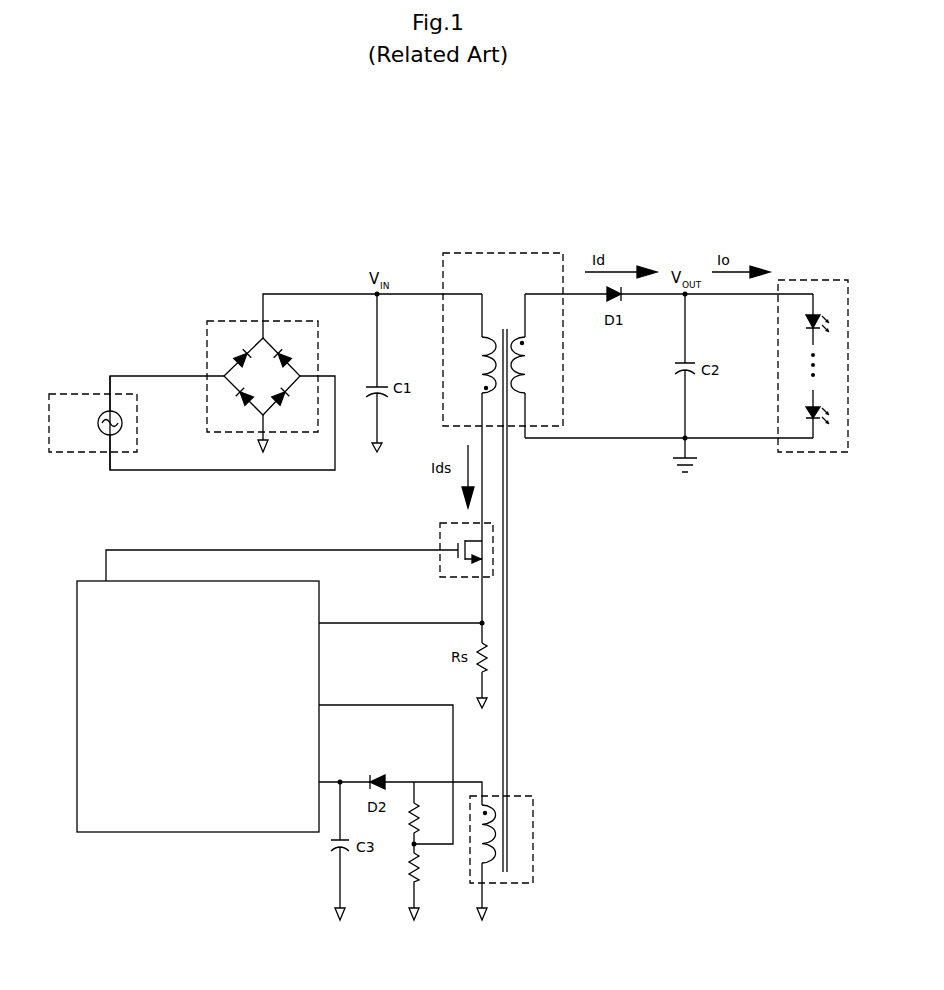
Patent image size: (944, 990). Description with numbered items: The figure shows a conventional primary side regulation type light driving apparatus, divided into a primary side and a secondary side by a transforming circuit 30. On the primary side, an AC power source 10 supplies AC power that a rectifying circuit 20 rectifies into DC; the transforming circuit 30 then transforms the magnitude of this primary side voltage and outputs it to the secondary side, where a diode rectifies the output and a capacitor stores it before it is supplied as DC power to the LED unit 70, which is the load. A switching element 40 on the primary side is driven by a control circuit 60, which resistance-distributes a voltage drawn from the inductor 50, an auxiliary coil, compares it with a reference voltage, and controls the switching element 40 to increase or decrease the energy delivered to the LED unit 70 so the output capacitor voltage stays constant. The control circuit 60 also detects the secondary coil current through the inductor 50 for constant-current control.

The AC power source 10 is at (63, 393).
The rectifying circuit 20 is at (230, 320).
The transforming circuit 30 is at (487, 252).
The switching element 40 is at (440, 530).
The inductor 50 is at (517, 883).
The control circuit 60 is at (216, 695).
The LED unit 70 is at (798, 280).